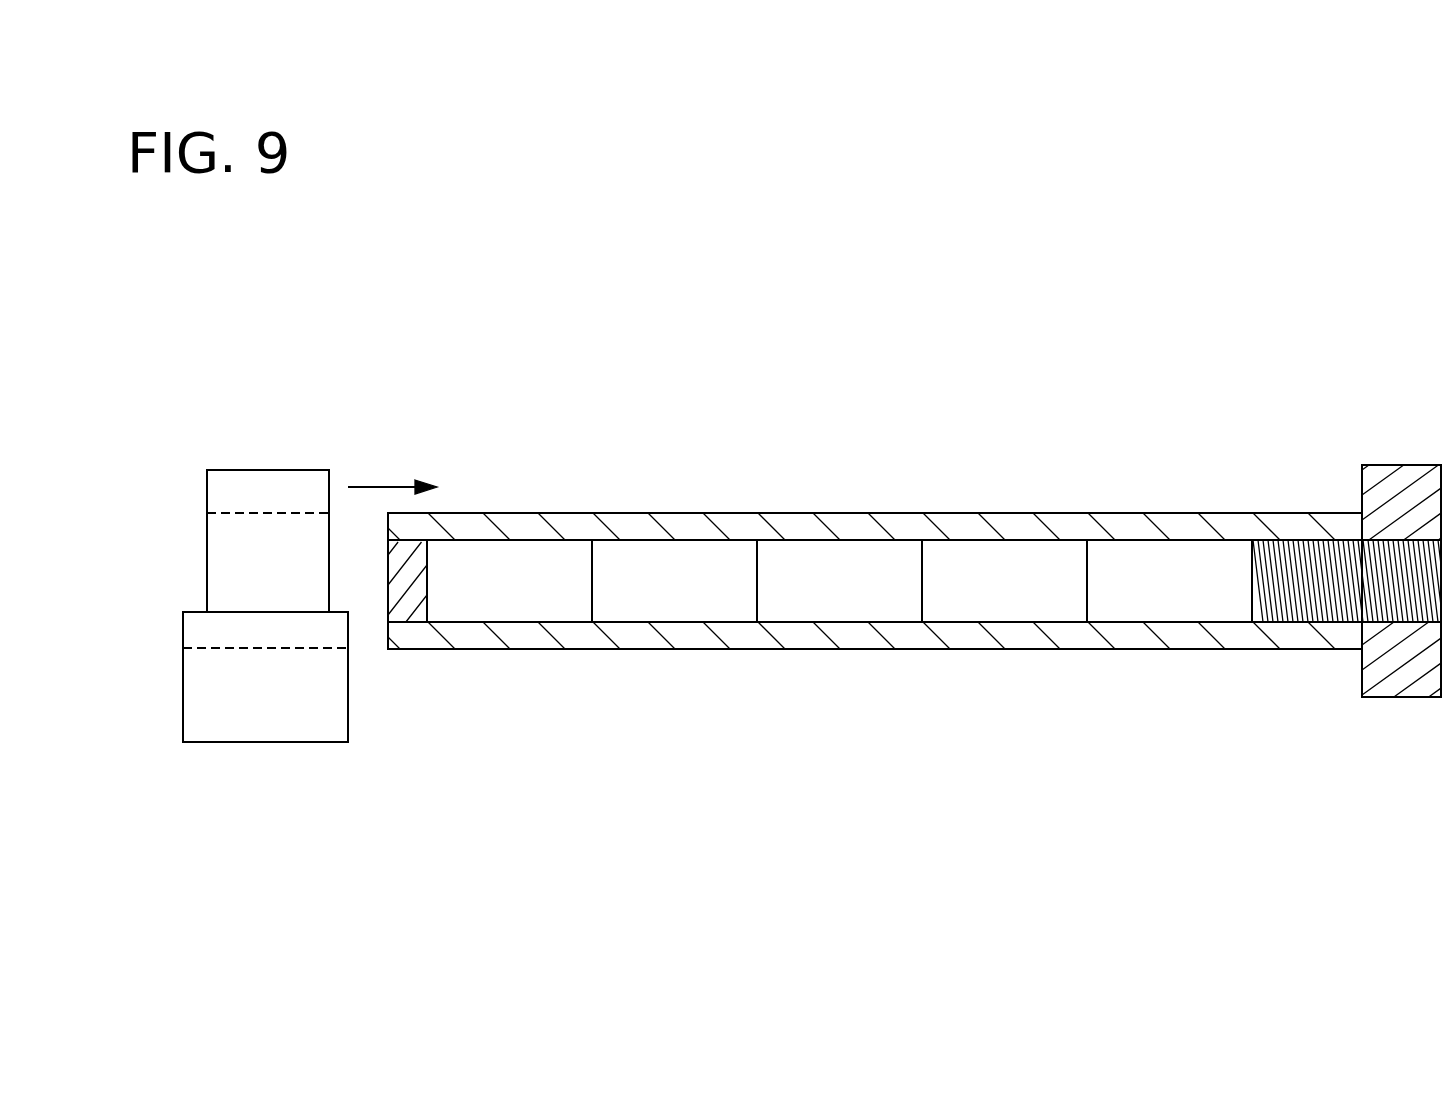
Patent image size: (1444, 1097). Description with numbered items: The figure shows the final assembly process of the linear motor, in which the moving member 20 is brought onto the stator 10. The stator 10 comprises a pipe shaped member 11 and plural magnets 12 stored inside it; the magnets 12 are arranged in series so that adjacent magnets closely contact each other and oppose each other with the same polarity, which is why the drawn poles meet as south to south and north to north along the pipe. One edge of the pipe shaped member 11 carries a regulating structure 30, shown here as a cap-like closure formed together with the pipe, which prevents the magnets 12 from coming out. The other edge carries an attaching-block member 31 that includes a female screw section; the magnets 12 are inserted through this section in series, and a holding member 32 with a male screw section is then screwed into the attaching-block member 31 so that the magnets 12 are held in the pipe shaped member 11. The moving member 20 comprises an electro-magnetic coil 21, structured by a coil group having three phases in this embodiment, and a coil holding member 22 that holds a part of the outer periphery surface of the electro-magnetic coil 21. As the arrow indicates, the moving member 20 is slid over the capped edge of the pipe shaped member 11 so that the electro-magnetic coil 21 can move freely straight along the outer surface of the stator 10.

The stator 10 is at (914, 596).
The pipe shaped member 11 is at (842, 527).
The magnets 12 is at (848, 600).
The moving member 20 is at (217, 564).
The electro-magnetic coil 21 is at (207, 563).
The coil holding member 22 is at (183, 673).
The regulating structure 30 is at (410, 608).
The attaching-block member 31 is at (1398, 698).
The holding member 32 is at (1293, 623).